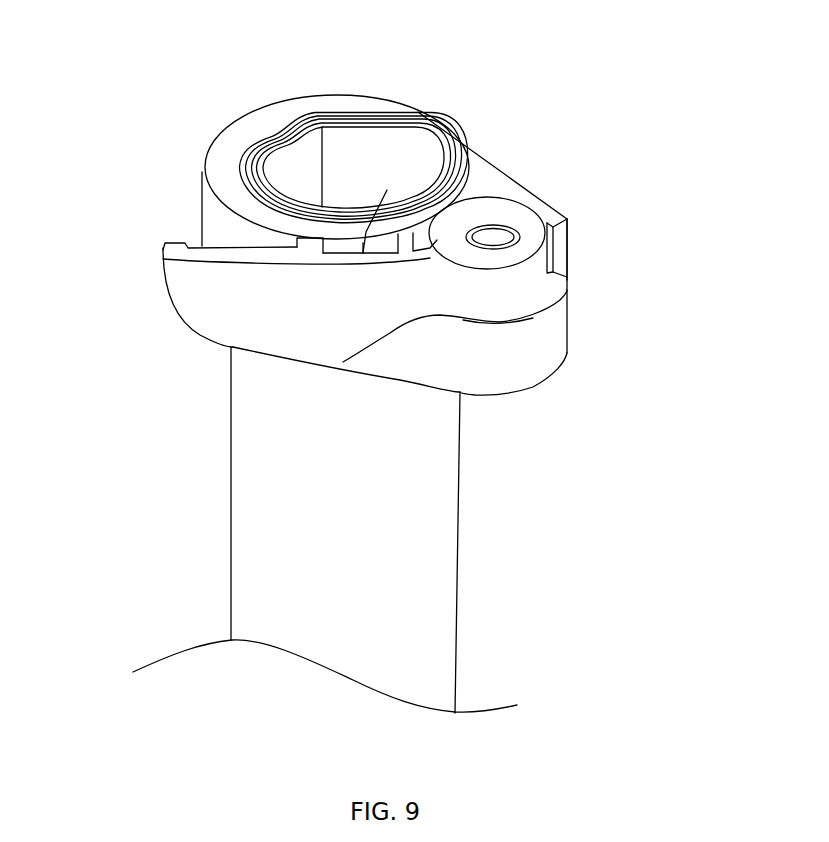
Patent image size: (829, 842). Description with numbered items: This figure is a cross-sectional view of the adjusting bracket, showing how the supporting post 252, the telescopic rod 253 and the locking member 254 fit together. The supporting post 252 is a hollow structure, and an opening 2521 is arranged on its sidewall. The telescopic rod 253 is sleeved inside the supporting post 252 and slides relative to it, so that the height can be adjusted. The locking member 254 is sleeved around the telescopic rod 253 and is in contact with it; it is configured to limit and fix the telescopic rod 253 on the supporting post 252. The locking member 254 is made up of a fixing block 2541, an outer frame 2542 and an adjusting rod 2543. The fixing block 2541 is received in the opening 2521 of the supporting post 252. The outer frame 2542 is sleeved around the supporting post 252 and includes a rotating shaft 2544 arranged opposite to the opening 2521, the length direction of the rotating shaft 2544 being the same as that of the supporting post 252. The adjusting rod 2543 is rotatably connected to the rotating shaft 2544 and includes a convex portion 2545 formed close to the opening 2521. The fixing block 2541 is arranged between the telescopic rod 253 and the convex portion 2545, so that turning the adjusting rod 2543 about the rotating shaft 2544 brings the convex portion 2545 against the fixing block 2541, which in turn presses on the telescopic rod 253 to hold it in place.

The supporting post 252 is at (450, 517).
The telescopic rod 253 is at (347, 130).
The locking member 254 is at (582, 241).
The opening 2521 is at (457, 177).
The fixing block 2541 is at (470, 198).
The outer frame 2542 is at (277, 120).
The adjusting rod 2543 is at (193, 323).
The rotating shaft 2544 is at (497, 240).
The convex portion 2545 is at (437, 215).